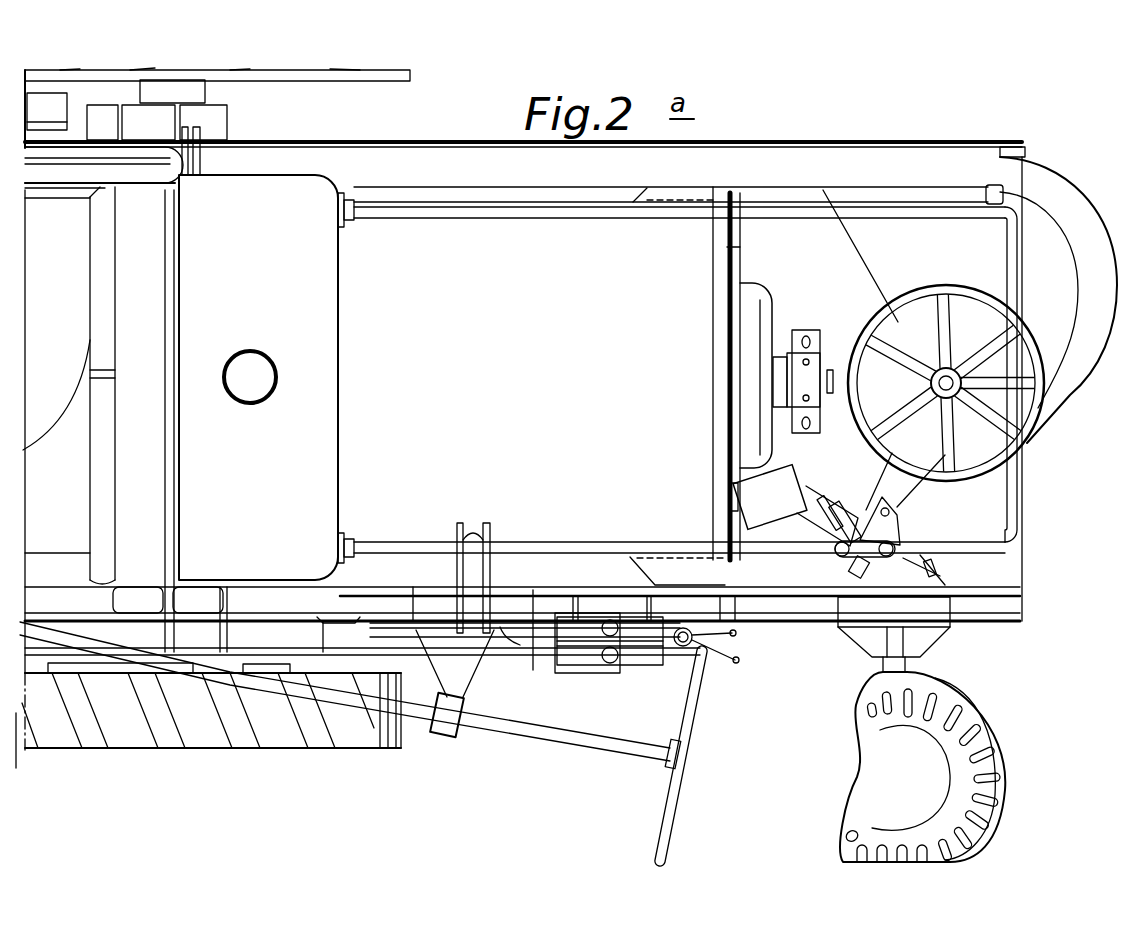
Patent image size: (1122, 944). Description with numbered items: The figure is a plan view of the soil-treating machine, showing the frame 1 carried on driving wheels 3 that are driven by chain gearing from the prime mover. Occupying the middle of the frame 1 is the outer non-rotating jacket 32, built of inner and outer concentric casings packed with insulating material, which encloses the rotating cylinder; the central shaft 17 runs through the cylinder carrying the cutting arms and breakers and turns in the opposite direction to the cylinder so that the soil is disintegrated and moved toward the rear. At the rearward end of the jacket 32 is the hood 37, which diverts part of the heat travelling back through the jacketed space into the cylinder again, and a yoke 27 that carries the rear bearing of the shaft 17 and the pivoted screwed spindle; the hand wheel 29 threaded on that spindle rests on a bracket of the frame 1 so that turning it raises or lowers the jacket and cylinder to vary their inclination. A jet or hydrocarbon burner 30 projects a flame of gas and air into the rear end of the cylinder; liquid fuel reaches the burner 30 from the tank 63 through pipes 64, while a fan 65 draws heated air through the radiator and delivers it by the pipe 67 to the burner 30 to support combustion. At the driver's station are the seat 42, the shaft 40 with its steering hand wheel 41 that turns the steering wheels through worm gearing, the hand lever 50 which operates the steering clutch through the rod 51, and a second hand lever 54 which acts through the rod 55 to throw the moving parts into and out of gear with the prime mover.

The frame 1 is at (770, 607).
The driving wheels 3 is at (300, 80).
The central shaft 17 is at (810, 399).
The yoke 27 is at (668, 194).
The hand wheel 29 is at (1025, 438).
The jet / hydrocarbon burner 30 is at (837, 525).
The outer non-rotating jacket 32 is at (622, 373).
The hood 37 is at (748, 322).
The shaft 40 is at (500, 722).
The hand wheel 41 is at (696, 697).
The seat 42 is at (958, 692).
The hand lever 50 is at (610, 620).
The rod 51 is at (250, 628).
The hand lever 54 is at (610, 663).
The rod 55 is at (502, 656).
The tank 63 is at (266, 377).
The pipes 64 is at (458, 215).
The fan 65 is at (148, 172).
The pipe 67 is at (913, 498).